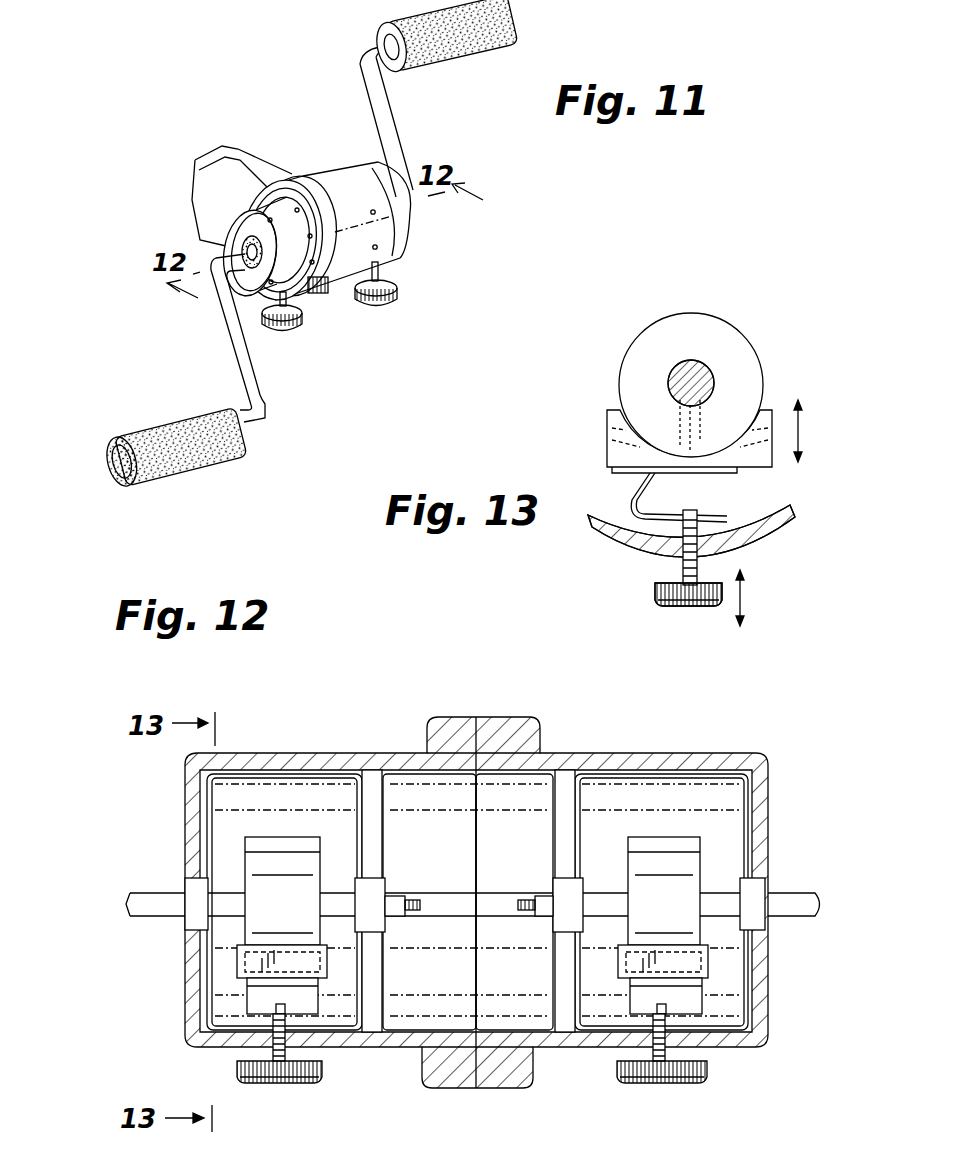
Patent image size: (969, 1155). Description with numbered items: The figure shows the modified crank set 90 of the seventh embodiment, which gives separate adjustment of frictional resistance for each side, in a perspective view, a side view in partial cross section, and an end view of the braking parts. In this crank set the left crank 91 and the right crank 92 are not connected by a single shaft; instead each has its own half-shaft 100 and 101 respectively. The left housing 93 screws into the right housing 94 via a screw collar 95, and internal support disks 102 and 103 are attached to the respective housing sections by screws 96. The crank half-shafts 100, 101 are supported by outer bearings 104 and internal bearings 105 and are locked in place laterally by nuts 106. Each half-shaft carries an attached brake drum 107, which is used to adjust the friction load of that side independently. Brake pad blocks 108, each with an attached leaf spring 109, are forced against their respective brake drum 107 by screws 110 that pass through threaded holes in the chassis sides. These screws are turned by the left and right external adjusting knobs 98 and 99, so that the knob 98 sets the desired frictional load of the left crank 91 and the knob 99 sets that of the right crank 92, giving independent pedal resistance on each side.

In FIG. 11, the crank set 90 is at (315, 84).
In FIG. 12, the crank set 90 is at (270, 746).
In FIG. 11, the left crank 91 is at (268, 412).
In FIG. 11, the right crank 92 is at (393, 138).
In FIG. 11, the left housing 93 is at (258, 198).
In FIG. 13, the left housing 93 is at (775, 535).
In FIG. 12, the left housing 93 is at (366, 752).
In FIG. 11, the right housing 94 is at (395, 236).
In FIG. 13, the right housing 94 is at (691, 531).
In FIG. 12, the right housing 94 is at (694, 762).
In FIG. 11, the screw collar 95 is at (312, 178).
In FIG. 12, the screw collar 95 is at (470, 725).
In FIG. 11, the screws 96 is at (358, 188).
In FIG. 11, the adjusting knob 98 is at (300, 338).
In FIG. 13, the adjusting knob 98 is at (692, 607).
In FIG. 12, the adjusting knob 98 is at (255, 1085).
In FIG. 11, the adjusting knob 99 is at (395, 310).
In FIG. 13, the adjusting knob 99 is at (688, 594).
In FIG. 12, the adjusting knob 99 is at (708, 1085).
In FIG. 13, the half-shaft 100 is at (705, 383).
In FIG. 12, the half-shaft 100 is at (138, 905).
In FIG. 13, the half-shaft 101 is at (691, 383).
In FIG. 12, the half-shaft 101 is at (808, 910).
In FIG. 12, the internal support disk 102 is at (366, 808).
In FIG. 12, the internal support disk 103 is at (566, 805).
In FIG. 12, the outer bearings 104 is at (188, 893).
In FIG. 12, the internal bearings 105 is at (372, 900).
In FIG. 12, the nuts 106 is at (400, 905).
In FIG. 13, the brake drum 107 is at (726, 318).
In FIG. 12, the brake drum 107 is at (282, 850).
In FIG. 13, the brake pad blocks 108 is at (614, 442).
In FIG. 12, the brake pad blocks 108 is at (240, 965).
In FIG. 13, the leaf spring 109 is at (633, 490).
In FIG. 12, the leaf spring 109 is at (250, 1000).
In FIG. 13, the screws 110 is at (680, 566).
In FIG. 12, the screws 110 is at (270, 1022).